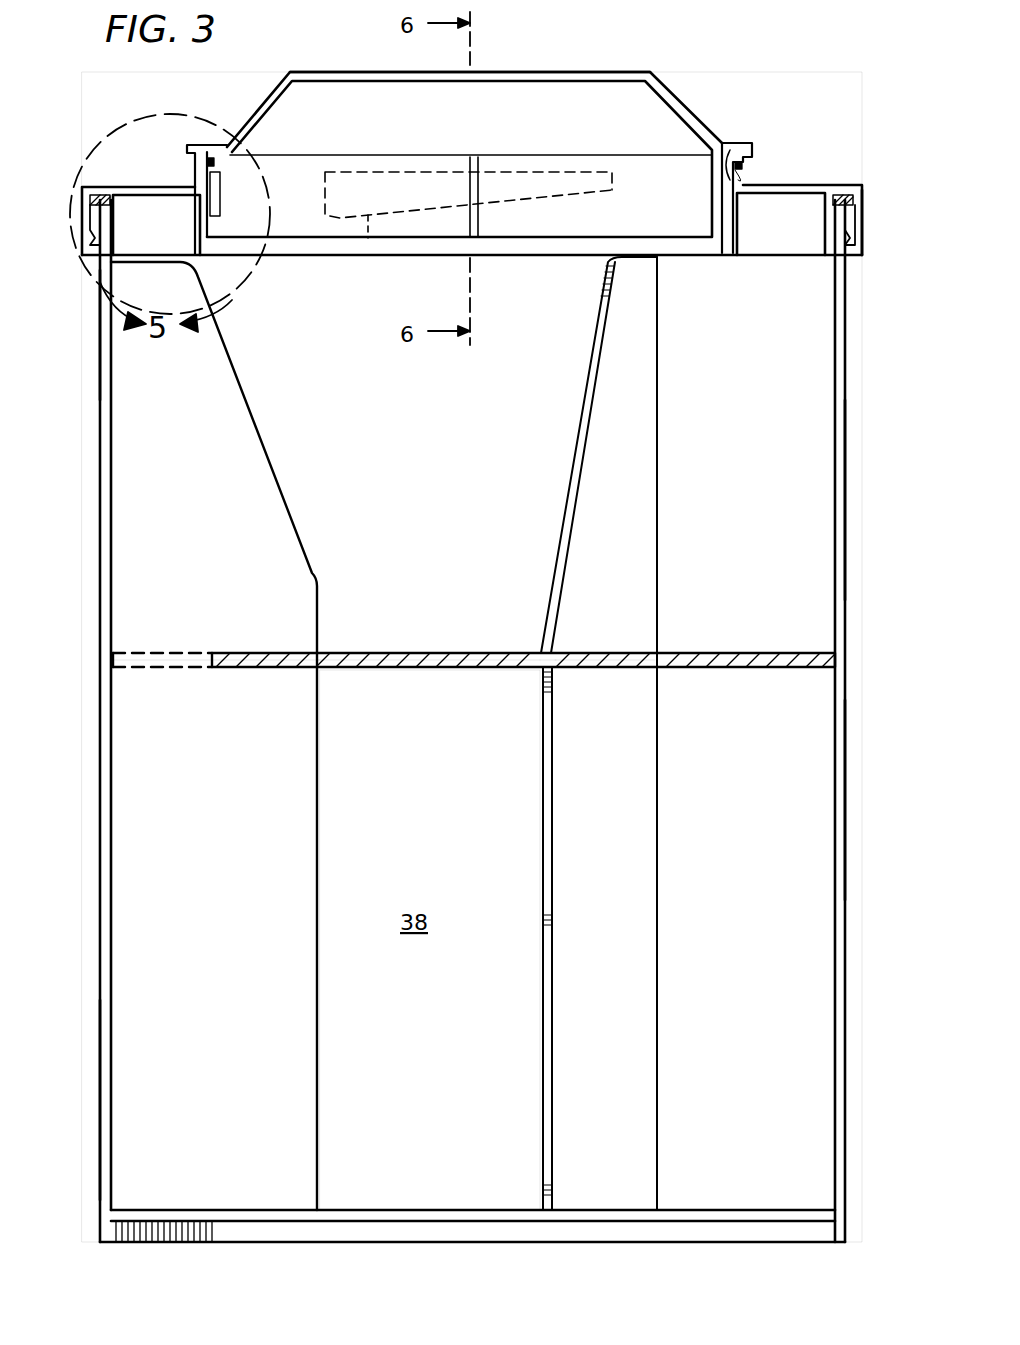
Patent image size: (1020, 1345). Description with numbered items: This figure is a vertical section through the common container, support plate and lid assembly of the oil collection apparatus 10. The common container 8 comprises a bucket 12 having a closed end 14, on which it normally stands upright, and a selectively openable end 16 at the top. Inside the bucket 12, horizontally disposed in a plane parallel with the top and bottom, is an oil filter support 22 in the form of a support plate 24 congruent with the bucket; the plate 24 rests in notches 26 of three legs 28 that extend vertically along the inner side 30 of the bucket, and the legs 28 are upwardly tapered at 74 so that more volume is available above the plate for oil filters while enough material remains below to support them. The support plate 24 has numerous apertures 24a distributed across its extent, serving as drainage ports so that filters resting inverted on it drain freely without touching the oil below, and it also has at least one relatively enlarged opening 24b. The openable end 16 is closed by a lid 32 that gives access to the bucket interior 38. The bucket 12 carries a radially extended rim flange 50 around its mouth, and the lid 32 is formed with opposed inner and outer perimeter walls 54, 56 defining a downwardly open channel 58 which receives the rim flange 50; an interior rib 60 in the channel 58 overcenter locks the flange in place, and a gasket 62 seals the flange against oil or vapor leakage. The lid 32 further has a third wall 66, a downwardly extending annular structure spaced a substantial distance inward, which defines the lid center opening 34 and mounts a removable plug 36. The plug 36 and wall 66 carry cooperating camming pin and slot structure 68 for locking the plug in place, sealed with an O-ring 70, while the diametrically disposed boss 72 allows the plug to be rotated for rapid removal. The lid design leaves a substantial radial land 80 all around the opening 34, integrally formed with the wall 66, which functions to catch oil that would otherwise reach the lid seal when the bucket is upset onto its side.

The common container 8 is at (100, 767).
The oil collection apparatus 10 is at (812, 118).
The bucket 12 is at (847, 842).
The closed end 14 is at (150, 1096).
The selectively openable end 16 is at (120, 275).
The oil filter support 22 is at (238, 680).
The support plate 24 is at (292, 652).
The apertures 24a is at (350, 668).
The enlarged opening 24b is at (568, 668).
The notches 26 is at (163, 650).
The legs 28 is at (640, 865).
The inner side 30 is at (830, 460).
The lid 32 is at (692, 85).
The center opening 34 is at (725, 145).
The removable plug 36 is at (352, 72).
The bucket interior 38 is at (430, 940).
The rim flange 50 is at (848, 210).
The inner perimeter wall 54 is at (862, 230).
The outer perimeter wall 56 is at (822, 225).
The channel 58 is at (125, 262).
The interior rib 60 is at (98, 228).
The gasket 62 is at (100, 200).
The third wall 66 is at (208, 263).
The pin and slot structure 68 is at (215, 190).
The O-ring 70 is at (745, 165).
The boss 72 is at (468, 169).
The upward taper 74 is at (575, 465).
The radial land 80 is at (765, 200).